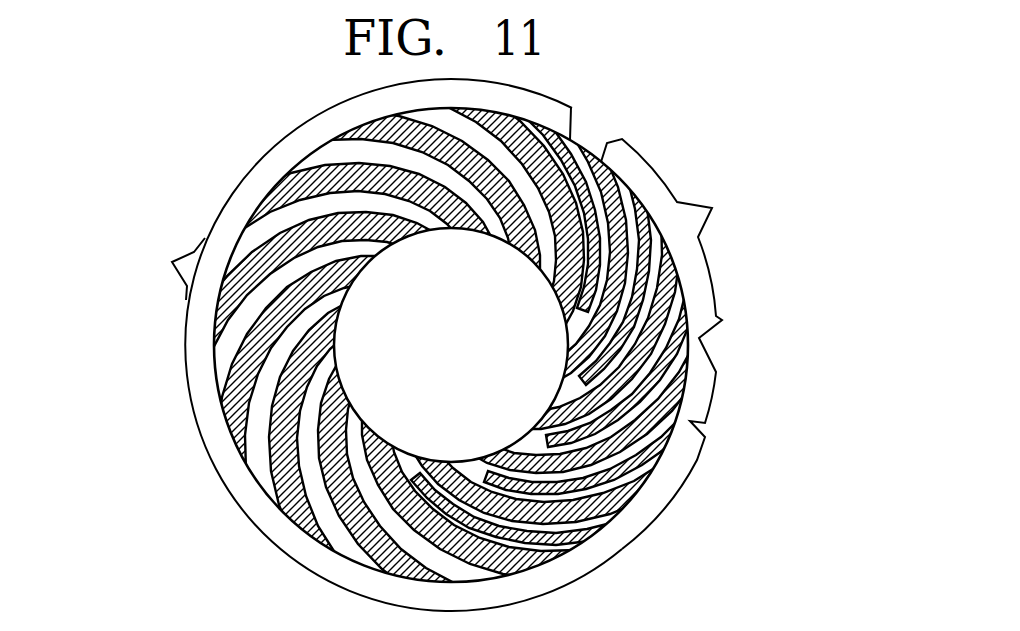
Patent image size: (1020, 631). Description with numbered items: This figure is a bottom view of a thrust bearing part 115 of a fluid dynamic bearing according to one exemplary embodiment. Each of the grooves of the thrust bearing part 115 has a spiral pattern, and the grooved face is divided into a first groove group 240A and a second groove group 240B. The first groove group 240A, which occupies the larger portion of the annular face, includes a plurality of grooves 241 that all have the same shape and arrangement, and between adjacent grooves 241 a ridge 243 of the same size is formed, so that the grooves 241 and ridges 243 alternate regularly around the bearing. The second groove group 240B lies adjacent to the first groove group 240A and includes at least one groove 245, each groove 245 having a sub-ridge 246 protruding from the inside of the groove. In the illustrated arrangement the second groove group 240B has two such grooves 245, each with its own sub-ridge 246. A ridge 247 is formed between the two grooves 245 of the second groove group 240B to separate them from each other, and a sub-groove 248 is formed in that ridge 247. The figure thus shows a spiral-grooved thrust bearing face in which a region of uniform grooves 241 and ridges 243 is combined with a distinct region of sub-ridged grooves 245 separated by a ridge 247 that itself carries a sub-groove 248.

The thrust bearing part 115 is at (494, 340).
The first groove group 240A is at (363, 345).
The second groove group 240B is at (692, 344).
The grooves 241 is at (381, 345).
The ridges 243 is at (140, 285).
The groove 245 is at (614, 442).
The sub-ridge 246 is at (660, 323).
The ridge 247 is at (673, 372).
The sub-groove 248 is at (671, 253).